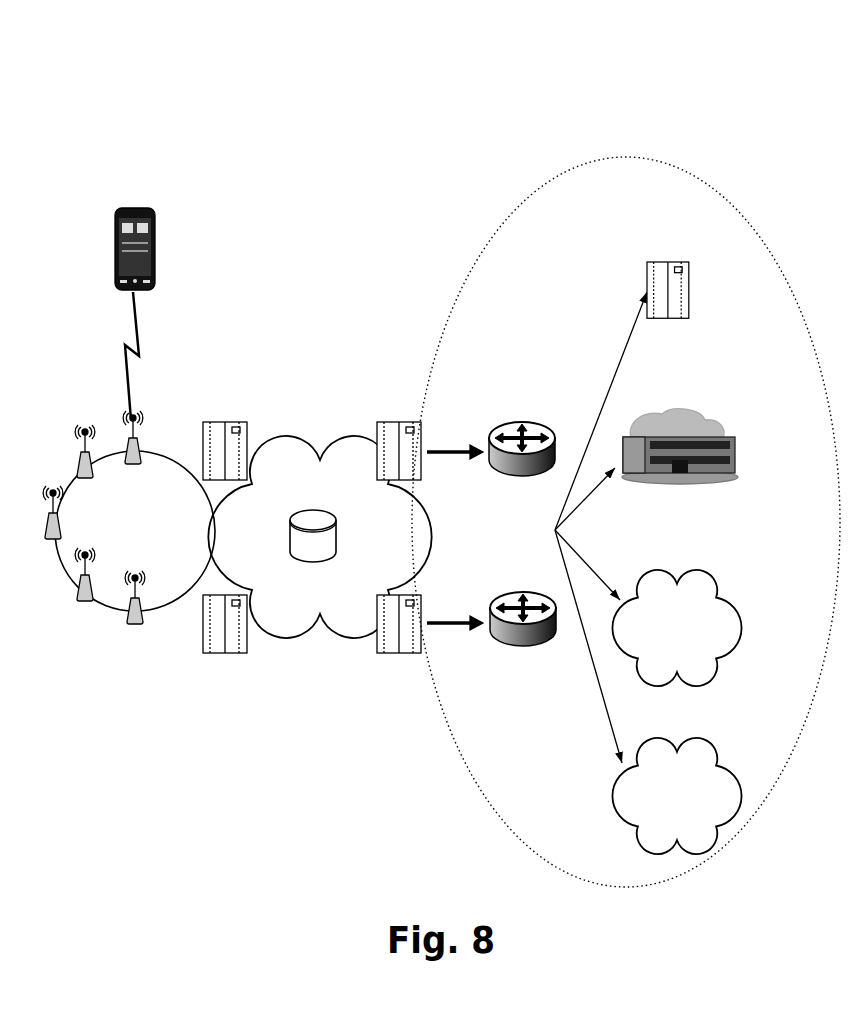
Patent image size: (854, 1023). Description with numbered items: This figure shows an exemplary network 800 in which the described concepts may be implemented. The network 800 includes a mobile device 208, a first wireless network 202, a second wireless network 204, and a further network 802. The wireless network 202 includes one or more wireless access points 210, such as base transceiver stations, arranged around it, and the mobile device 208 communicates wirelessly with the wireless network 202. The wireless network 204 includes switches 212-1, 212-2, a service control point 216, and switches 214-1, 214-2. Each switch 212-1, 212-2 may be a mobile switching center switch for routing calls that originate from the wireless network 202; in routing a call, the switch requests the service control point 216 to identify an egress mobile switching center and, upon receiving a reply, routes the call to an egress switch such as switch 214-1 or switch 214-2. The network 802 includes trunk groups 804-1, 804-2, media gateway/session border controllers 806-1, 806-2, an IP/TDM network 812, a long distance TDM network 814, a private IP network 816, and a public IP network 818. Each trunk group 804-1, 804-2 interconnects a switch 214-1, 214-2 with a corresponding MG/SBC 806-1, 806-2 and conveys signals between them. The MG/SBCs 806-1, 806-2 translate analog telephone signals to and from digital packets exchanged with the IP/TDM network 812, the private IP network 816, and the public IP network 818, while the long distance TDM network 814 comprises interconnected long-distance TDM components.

The network 800 is at (396, 96).
The wireless network 202 is at (107, 608).
The wireless access point 210 is at (84, 448).
The mobile device 208 is at (157, 213).
The wireless network 204 is at (283, 433).
The service control point 216 is at (338, 533).
The switch 212-1 is at (220, 421).
The switch 212-2 is at (215, 655).
The switch 214-1 is at (392, 420).
The switch 214-2 is at (392, 655).
The network 802 is at (447, 318).
The trunk group 804-1 is at (460, 448).
The trunk group 804-2 is at (440, 627).
The media gateway/session border controller 806-1 is at (523, 422).
The media gateway/session border controller 806-2 is at (523, 592).
The IP/TDM network 812 is at (690, 283).
The long distance TDM network 814 is at (715, 440).
The private IP network 816 is at (695, 572).
The public IP network 818 is at (695, 740).